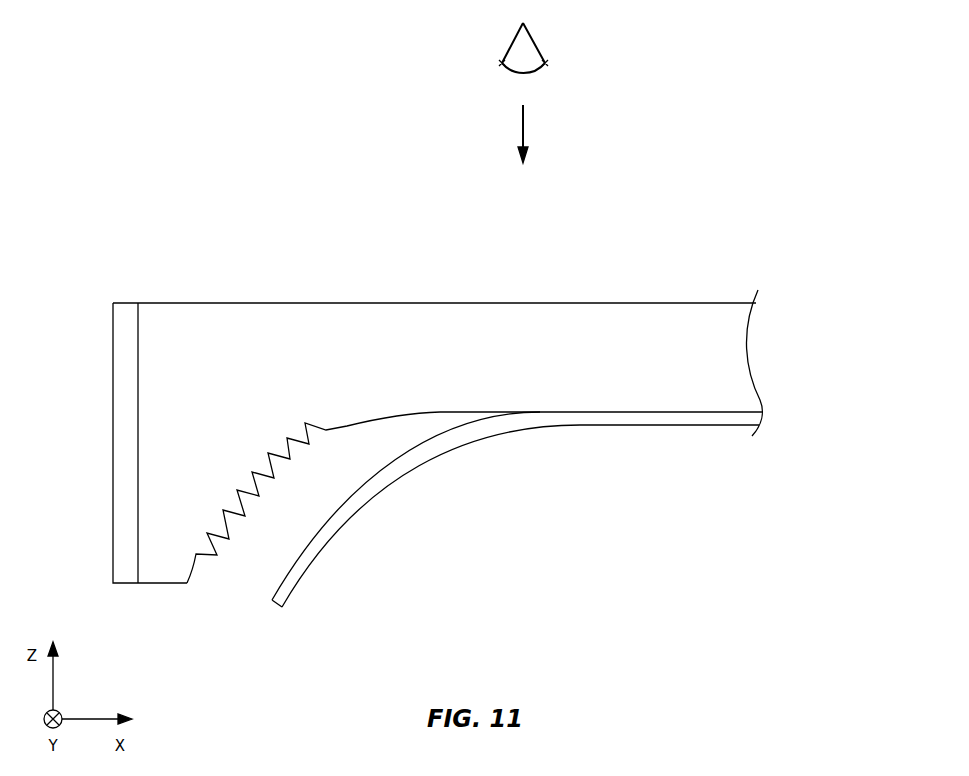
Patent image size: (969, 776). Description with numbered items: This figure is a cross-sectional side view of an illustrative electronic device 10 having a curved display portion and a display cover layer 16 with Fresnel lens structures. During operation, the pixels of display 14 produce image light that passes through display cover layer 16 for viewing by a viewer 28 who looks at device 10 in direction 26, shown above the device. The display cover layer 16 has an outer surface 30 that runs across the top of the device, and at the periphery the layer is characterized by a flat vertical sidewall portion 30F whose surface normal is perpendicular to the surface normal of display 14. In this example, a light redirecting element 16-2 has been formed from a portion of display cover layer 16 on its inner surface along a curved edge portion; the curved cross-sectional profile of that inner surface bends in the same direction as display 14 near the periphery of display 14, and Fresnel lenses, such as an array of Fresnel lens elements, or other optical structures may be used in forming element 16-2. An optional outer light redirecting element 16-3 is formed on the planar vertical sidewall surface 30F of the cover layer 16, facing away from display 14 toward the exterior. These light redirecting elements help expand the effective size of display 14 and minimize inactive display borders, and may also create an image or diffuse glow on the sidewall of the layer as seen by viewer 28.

The electronic device 10 is at (808, 263).
The display 14 is at (418, 465).
The display cover layer 16 is at (730, 358).
The light redirecting element 16-2 is at (260, 517).
The outer light redirecting element 16-3 is at (123, 535).
The viewing direction 26 is at (523, 118).
The viewer 28 is at (532, 40).
The outer surface 30 is at (481, 302).
The flat vertical sidewall portion 30F is at (138, 377).